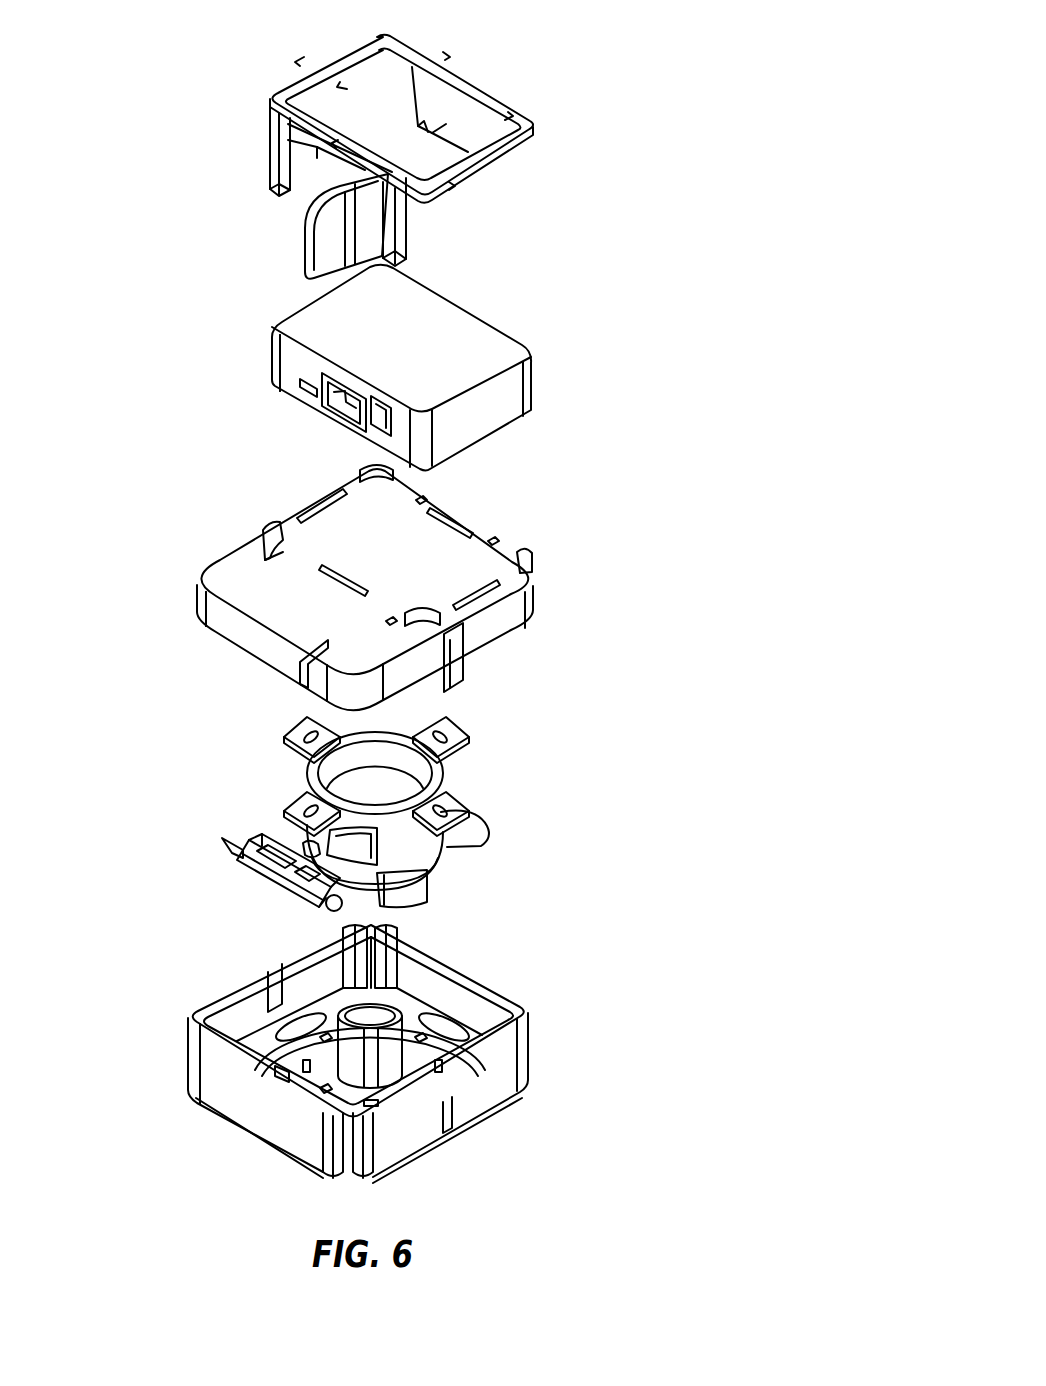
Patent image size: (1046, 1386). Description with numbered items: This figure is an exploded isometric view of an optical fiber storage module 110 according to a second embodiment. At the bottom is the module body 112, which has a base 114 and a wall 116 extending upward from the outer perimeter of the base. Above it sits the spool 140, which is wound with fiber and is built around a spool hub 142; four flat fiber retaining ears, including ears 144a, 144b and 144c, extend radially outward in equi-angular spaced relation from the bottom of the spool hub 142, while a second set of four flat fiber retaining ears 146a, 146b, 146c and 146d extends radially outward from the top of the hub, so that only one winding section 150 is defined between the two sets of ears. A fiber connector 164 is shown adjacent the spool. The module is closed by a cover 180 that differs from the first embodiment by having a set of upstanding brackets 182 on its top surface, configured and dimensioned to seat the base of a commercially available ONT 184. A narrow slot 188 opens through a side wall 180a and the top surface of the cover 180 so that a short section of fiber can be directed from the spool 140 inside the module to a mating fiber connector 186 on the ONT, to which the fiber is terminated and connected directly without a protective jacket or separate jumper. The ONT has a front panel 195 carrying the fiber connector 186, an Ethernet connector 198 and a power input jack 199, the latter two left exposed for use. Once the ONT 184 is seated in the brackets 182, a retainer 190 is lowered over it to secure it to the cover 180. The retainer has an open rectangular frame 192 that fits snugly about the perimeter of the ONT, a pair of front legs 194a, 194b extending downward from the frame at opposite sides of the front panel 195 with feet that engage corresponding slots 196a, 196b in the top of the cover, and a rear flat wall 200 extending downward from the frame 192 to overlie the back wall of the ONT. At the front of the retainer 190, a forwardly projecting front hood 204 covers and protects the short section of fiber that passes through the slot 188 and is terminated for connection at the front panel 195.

The optical fiber storage module 110 is at (660, 605).
The module body 112 is at (505, 1103).
The base 114 is at (470, 1051).
The wall 116 is at (410, 1136).
The spool 140 is at (445, 855).
The spool hub 142 is at (362, 868).
The flat fiber retaining ear 144a is at (298, 842).
The flat fiber retaining ear 144b is at (415, 888).
The flat fiber retaining ear 144c is at (478, 826).
The flat fiber retaining ear 146a is at (289, 800).
The flat fiber retaining ear 146b is at (457, 796).
The flat fiber retaining ear 146c is at (466, 730).
The flat fiber retaining ear 146d is at (285, 734).
The winding section 150 is at (430, 856).
The fiber optic connector 164 is at (272, 882).
The cover 180 is at (478, 521).
The side wall 180a is at (229, 628).
The upstanding brackets 182 is at (360, 471).
The ONT 184 is at (472, 338).
The fiber connector 186 is at (378, 423).
The narrow slot 188 is at (299, 674).
The retainer 190 is at (508, 98).
The open rectangular frame 192 is at (392, 36).
The front leg 194a is at (270, 165).
The front leg 194b is at (411, 233).
The front panel 195 is at (283, 359).
The slot 196a is at (281, 559).
The slot 196b is at (395, 640).
The Ethernet connector 198 is at (345, 410).
The power input jack 199 is at (305, 392).
The rear flat wall 200 is at (413, 102).
The front hood 204 is at (303, 256).